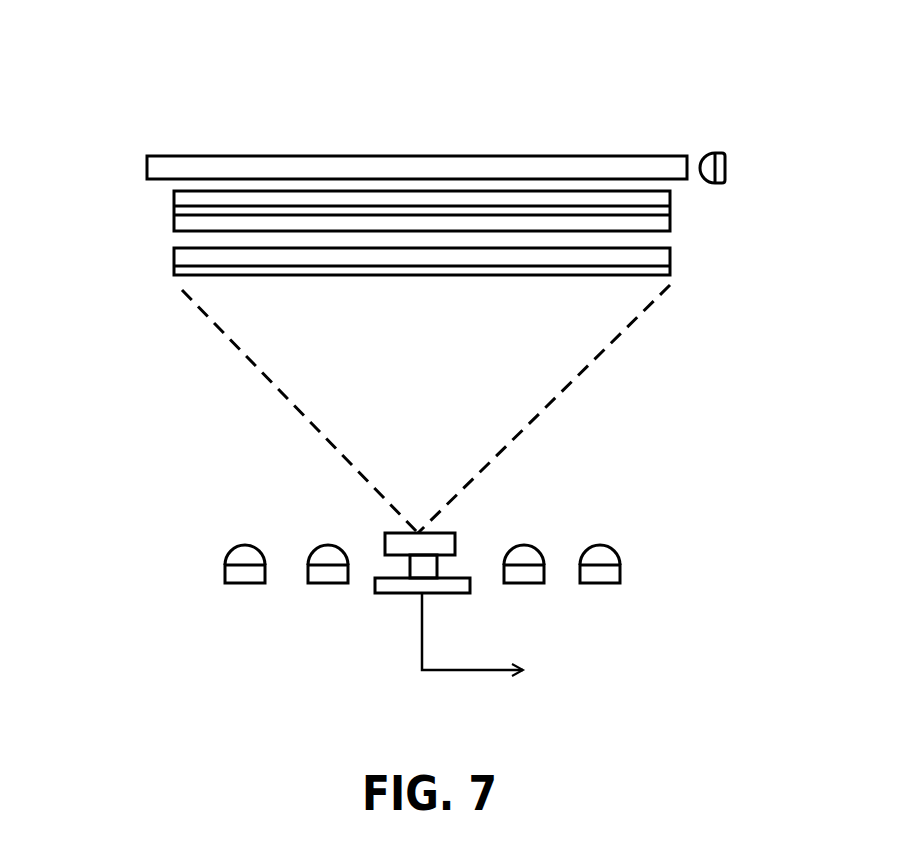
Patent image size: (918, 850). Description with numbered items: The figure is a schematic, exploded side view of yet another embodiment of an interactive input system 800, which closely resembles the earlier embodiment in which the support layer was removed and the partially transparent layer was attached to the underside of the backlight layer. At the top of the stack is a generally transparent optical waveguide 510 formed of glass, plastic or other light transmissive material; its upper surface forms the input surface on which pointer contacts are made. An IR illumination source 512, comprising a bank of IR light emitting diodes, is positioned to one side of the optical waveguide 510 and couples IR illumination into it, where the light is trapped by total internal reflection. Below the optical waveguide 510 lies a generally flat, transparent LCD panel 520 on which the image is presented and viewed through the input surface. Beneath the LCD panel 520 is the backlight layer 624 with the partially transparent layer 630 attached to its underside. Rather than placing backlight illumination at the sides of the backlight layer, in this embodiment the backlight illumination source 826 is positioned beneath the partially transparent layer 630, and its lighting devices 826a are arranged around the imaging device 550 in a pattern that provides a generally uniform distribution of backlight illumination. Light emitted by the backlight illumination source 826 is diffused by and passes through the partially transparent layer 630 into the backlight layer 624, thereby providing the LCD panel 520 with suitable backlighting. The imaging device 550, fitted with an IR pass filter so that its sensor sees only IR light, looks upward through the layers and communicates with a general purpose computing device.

The interactive input system 800 is at (152, 100).
The optical waveguide 510 is at (465, 160).
The IR illumination source 512 is at (723, 152).
The LCD panel 520 is at (163, 190).
The backlight layer 624 is at (182, 255).
The partially transparent layer 630 is at (193, 275).
The imaging device 550 is at (413, 542).
The lighting devices 826a is at (245, 558).
The backlight illumination source 826 is at (647, 520).